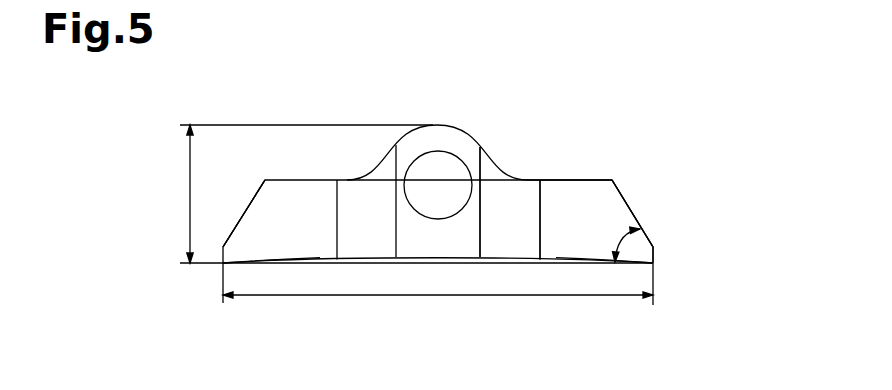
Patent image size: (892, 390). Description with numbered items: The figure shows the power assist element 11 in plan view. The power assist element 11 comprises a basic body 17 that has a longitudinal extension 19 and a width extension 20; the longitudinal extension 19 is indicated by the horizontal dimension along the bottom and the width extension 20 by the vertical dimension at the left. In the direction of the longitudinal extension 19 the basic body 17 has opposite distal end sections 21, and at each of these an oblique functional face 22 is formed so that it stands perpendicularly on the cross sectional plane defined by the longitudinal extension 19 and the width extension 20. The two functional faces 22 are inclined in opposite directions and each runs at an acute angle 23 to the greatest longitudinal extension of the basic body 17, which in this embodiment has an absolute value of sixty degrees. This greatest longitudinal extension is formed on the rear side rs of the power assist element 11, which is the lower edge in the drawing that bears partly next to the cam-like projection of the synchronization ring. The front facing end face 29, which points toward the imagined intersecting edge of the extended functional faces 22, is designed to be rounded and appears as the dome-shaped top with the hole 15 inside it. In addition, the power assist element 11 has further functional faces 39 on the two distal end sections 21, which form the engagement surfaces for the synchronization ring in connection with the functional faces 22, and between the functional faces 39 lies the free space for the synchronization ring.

The power assist element 11 is at (633, 162).
The fastening hole 15 is at (450, 175).
The basic body 17 is at (513, 195).
The longitudinal extension 19 is at (438, 300).
The width extension 20 is at (178, 215).
The distal end section 21 is at (240, 180).
The functional face 22 is at (233, 223).
The acute angle 23 is at (613, 237).
The front facing end face 29 is at (443, 118).
The functional face 39 is at (275, 265).
The rear side rs is at (323, 267).